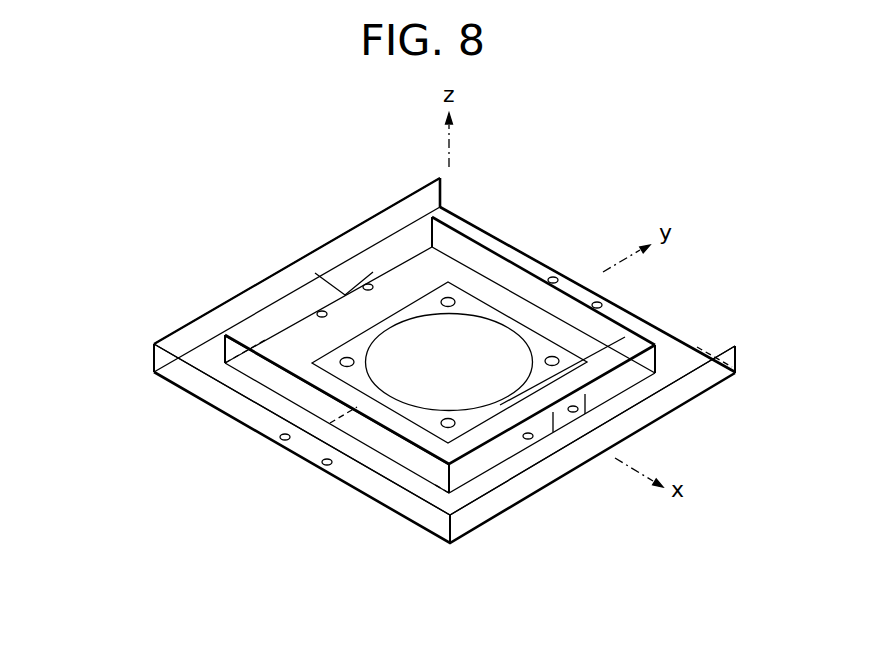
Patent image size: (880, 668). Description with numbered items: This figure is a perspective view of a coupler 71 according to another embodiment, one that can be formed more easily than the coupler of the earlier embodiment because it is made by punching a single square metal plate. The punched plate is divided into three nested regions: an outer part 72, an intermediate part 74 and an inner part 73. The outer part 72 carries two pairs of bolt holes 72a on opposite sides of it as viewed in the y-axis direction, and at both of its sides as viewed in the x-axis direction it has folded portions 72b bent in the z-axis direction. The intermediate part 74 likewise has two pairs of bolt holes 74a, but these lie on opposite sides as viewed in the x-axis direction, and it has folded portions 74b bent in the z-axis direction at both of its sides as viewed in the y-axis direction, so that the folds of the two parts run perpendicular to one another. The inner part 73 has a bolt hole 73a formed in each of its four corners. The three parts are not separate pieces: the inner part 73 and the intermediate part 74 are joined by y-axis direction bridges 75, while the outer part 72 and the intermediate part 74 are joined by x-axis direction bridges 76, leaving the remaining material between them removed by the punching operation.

The coupler 71 is at (257, 228).
The outer part 72 is at (472, 220).
The bolt holes 72a is at (322, 462).
The folded portions 72b is at (152, 357).
The inner part 73 is at (478, 298).
The bolt hole 73a is at (553, 360).
The intermediate part 74 is at (373, 273).
The bolt holes 74a is at (322, 308).
The folded portions 74b is at (440, 233).
The y-axis direction bridges 75 is at (523, 307).
The x-axis direction bridges 76 is at (563, 442).